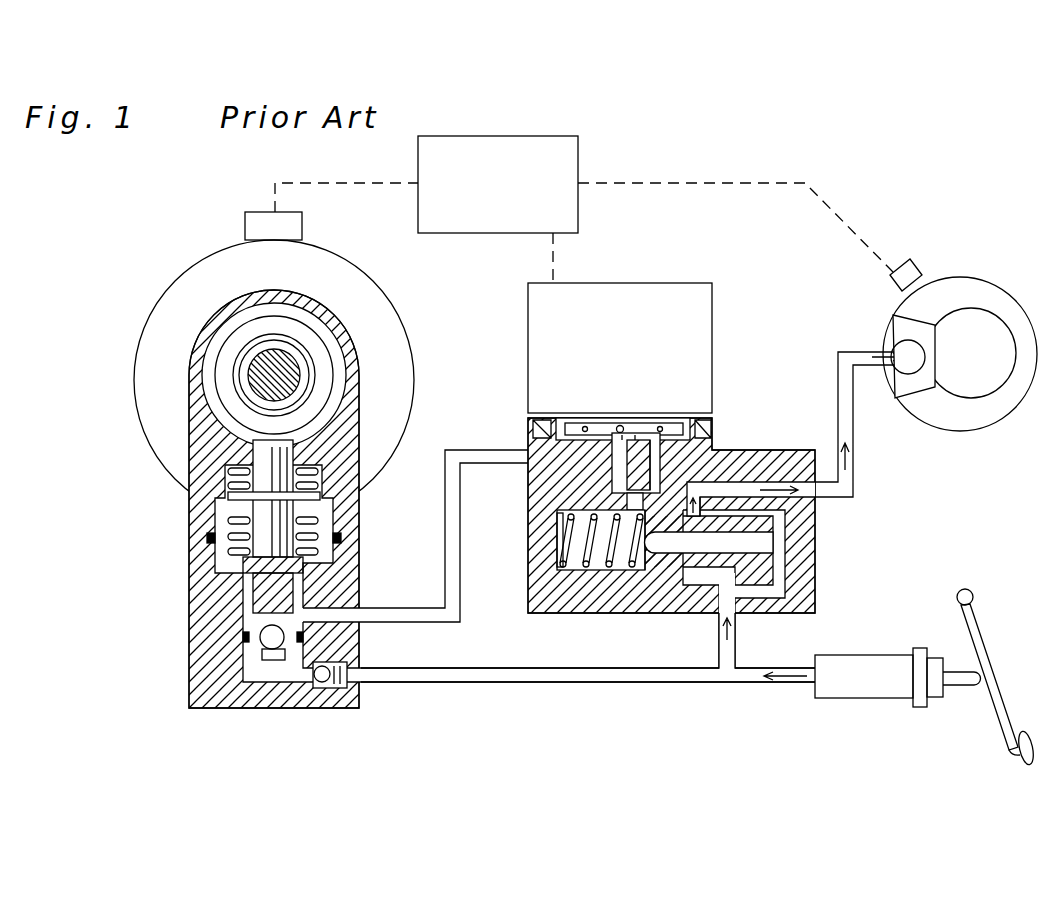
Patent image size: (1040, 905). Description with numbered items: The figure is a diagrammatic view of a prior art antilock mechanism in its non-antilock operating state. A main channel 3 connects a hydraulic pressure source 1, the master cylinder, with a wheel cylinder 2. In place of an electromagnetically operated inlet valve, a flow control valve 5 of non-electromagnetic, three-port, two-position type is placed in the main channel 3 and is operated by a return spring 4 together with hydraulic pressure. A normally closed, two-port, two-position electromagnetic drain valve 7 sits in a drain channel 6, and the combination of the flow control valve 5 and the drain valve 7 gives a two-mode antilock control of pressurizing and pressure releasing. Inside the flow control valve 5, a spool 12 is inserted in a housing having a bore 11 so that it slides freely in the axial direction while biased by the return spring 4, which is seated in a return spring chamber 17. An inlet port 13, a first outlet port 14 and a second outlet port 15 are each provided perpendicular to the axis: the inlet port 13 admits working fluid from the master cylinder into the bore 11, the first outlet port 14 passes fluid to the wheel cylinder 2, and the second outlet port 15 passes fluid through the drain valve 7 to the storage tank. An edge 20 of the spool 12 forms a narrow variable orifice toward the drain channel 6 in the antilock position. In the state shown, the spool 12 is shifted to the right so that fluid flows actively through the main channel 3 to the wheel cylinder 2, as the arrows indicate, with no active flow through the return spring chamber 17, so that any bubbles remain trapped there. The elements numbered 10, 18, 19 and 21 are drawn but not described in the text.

The hydraulic pressure source 1 is at (862, 681).
The wheel cylinder 2 is at (905, 330).
The main channel 3 is at (727, 655).
The return spring 4 is at (557, 562).
The flow control valve 5 is at (514, 420).
The drain channel 6 is at (658, 455).
The electromagnetic drain valve 7 is at (518, 342).
The passage 10 is at (705, 498).
The bore 11 is at (588, 572).
The spool 12 is at (660, 565).
The inlet port 13 is at (718, 575).
The first outlet port 14 is at (720, 458).
The second outlet port 15 is at (657, 500).
The return spring chamber 17 is at (562, 518).
The piston rod 18 is at (750, 540).
The spring seat 19 is at (562, 540).
The edge 20 is at (633, 567).
The valve seat 21 is at (623, 498).